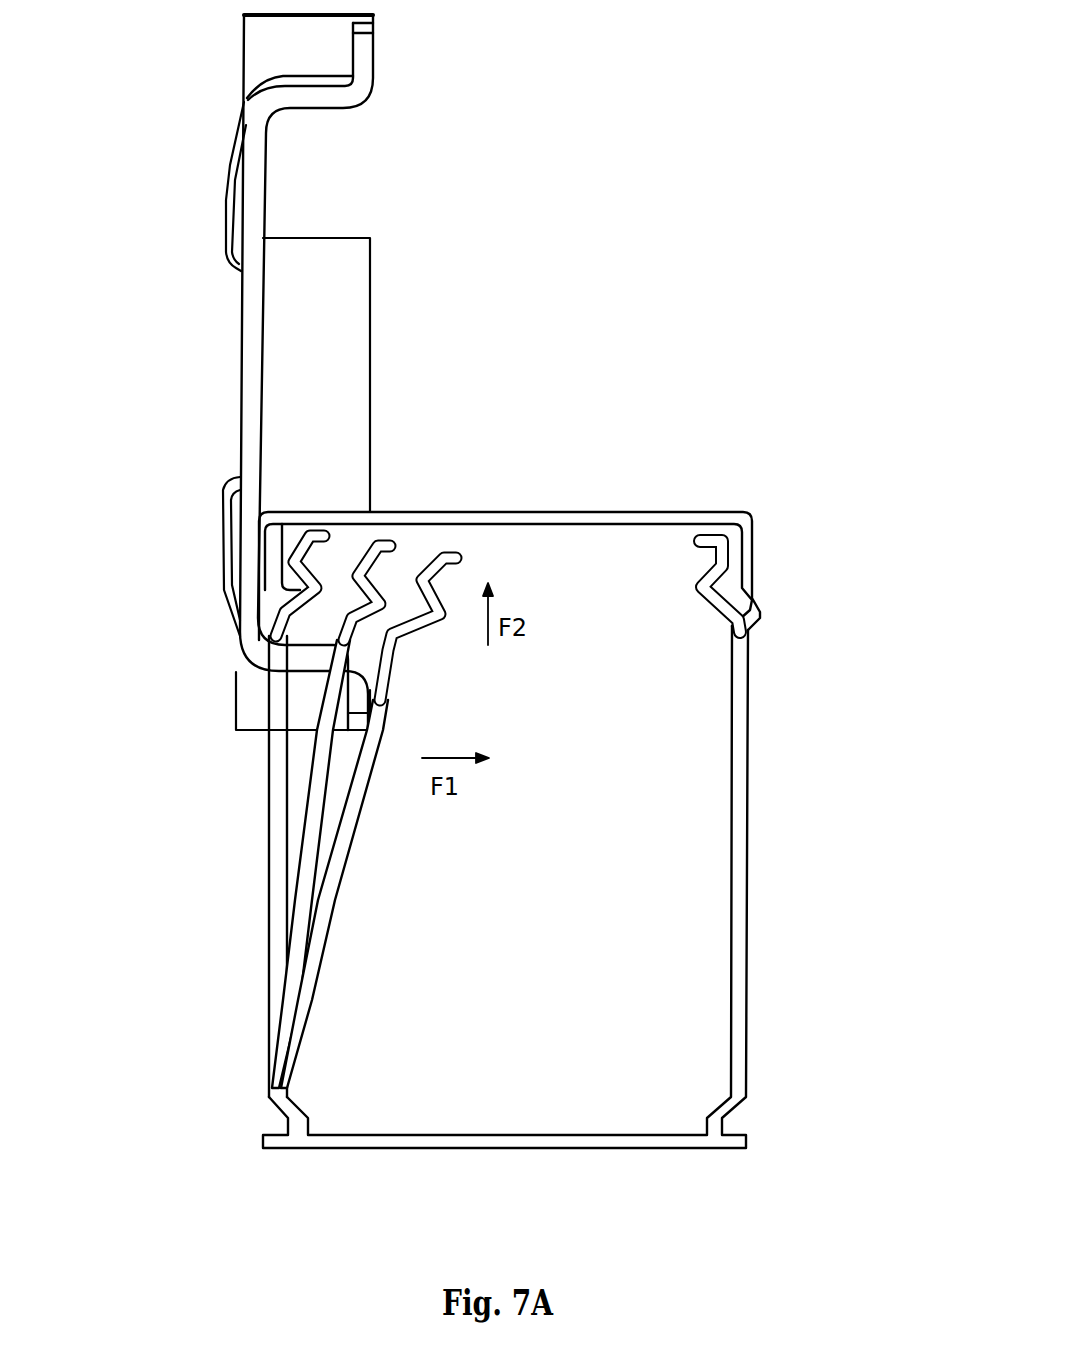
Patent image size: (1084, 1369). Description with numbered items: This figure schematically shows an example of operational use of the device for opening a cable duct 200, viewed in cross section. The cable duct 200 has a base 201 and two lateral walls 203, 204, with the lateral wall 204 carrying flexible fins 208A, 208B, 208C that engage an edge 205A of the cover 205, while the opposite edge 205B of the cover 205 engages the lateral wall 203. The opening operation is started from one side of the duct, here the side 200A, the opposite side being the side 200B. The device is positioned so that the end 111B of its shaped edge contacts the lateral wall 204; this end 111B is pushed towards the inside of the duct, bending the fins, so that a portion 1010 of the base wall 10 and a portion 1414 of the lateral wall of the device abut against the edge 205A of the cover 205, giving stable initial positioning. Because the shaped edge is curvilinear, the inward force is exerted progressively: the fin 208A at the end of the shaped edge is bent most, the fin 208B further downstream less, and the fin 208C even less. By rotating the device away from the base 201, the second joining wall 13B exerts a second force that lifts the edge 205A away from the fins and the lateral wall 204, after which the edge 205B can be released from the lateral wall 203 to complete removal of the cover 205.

The base wall 10 is at (240, 610).
The portion of the base wall 1010 is at (257, 555).
The second joining wall 13B is at (262, 658).
The portion of the lateral wall 1414 is at (312, 511).
The cover 205 is at (566, 512).
The edge of the cover 205A is at (265, 535).
The edge of the cover 205B is at (757, 545).
The cable duct 200 is at (767, 468).
The side of the cable duct 200A is at (201, 1024).
The side of the cable duct 200B is at (786, 670).
The lateral wall 203 is at (752, 782).
The base of the duct 201 is at (495, 1150).
The lateral wall 204 is at (220, 883).
The fin 208A is at (322, 968).
The fin 208B is at (314, 909).
The fin 208C is at (288, 830).
The end of the shaped edge 111B is at (365, 674).